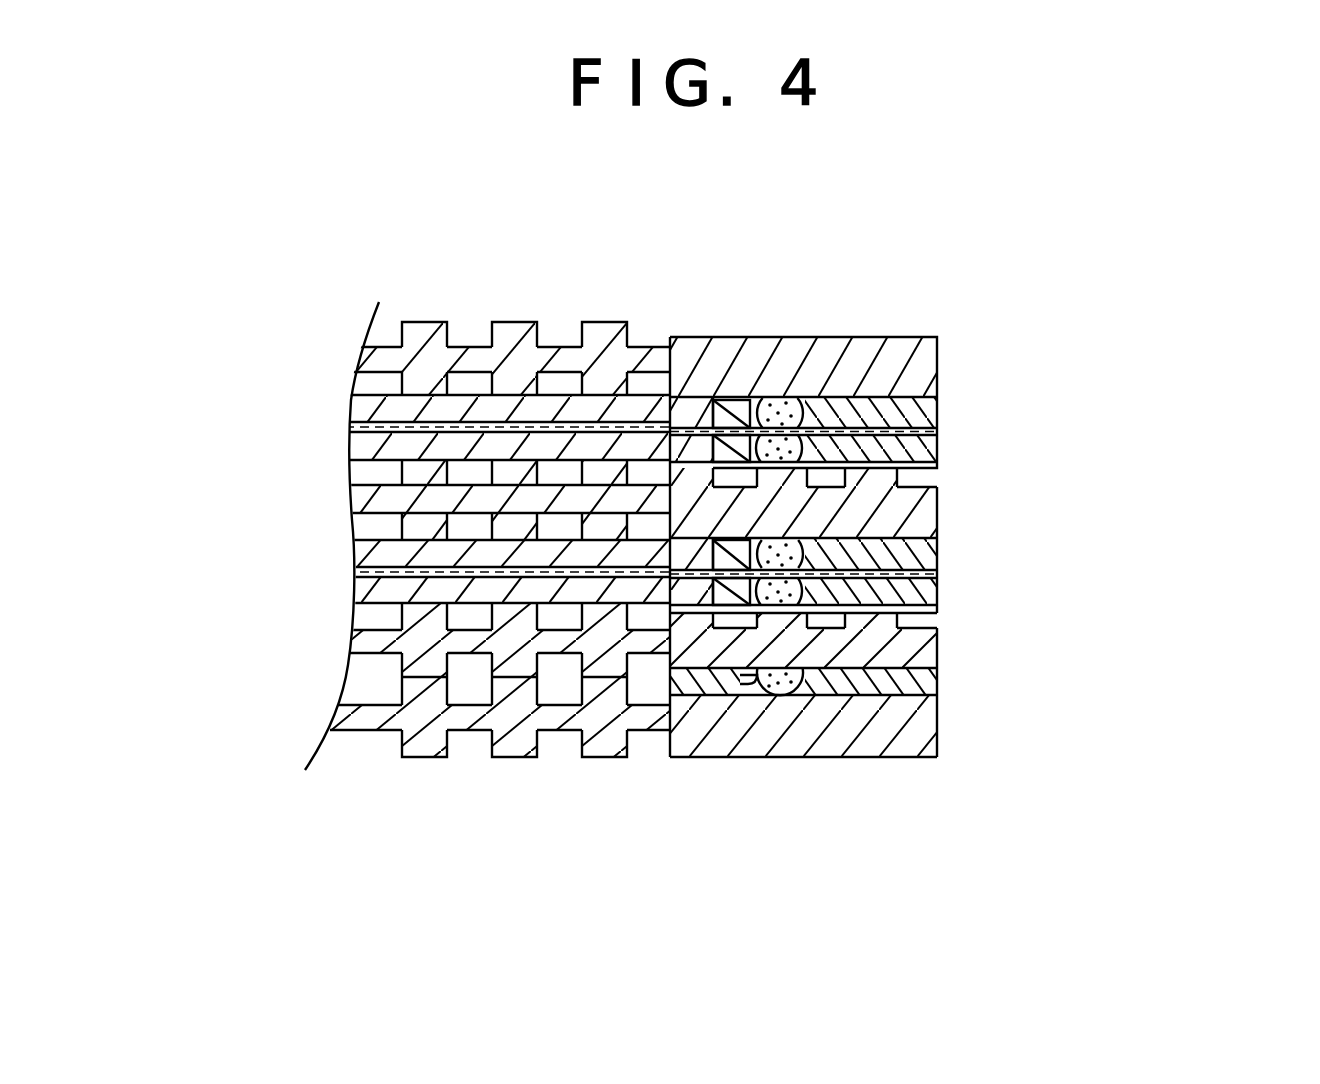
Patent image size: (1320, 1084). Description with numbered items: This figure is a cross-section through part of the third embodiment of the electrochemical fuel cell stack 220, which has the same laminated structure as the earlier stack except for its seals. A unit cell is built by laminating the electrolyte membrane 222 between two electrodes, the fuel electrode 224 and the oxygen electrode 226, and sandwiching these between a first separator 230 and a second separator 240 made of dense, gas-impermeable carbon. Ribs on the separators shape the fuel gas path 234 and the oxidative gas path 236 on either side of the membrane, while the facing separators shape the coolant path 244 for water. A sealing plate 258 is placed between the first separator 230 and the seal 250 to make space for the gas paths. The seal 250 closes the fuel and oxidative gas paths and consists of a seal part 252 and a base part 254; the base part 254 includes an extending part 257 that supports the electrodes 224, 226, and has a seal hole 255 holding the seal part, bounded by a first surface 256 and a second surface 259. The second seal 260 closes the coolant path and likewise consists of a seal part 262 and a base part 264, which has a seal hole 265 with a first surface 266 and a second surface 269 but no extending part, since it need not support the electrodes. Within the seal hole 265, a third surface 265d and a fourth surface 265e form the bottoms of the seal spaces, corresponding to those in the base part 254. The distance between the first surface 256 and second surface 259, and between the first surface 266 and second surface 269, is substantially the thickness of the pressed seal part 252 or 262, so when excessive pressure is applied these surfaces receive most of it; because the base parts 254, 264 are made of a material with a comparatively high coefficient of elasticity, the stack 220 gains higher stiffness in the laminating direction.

The electrochemical fuel cell stack 220 is at (720, 556).
The electrolyte membrane 222 is at (937, 430).
The fuel electrode 224 is at (640, 468).
The oxygen electrode 226 is at (640, 468).
The first separator 230 is at (937, 500).
The fuel gas path 234 is at (471, 466).
The oxidative gas path 236 is at (462, 525).
The second separator 240 is at (937, 371).
The coolant path 244 is at (552, 690).
The seal 250 is at (765, 575).
The seal part 252 is at (787, 538).
The base part 254 is at (937, 557).
The seal hole 255 is at (805, 403).
The first surface 256 is at (745, 400).
The extending part 257 is at (700, 397).
The sealing plate 258 is at (937, 467).
The second surface 259 is at (937, 407).
The seal 260 is at (750, 790).
The seal part 262 is at (793, 682).
The base part 264 is at (858, 677).
The seal hole 265 is at (753, 697).
The third surface 265d is at (760, 695).
The fourth surface 265e is at (742, 696).
The first surface 266 is at (910, 758).
The second surface 269 is at (937, 633).